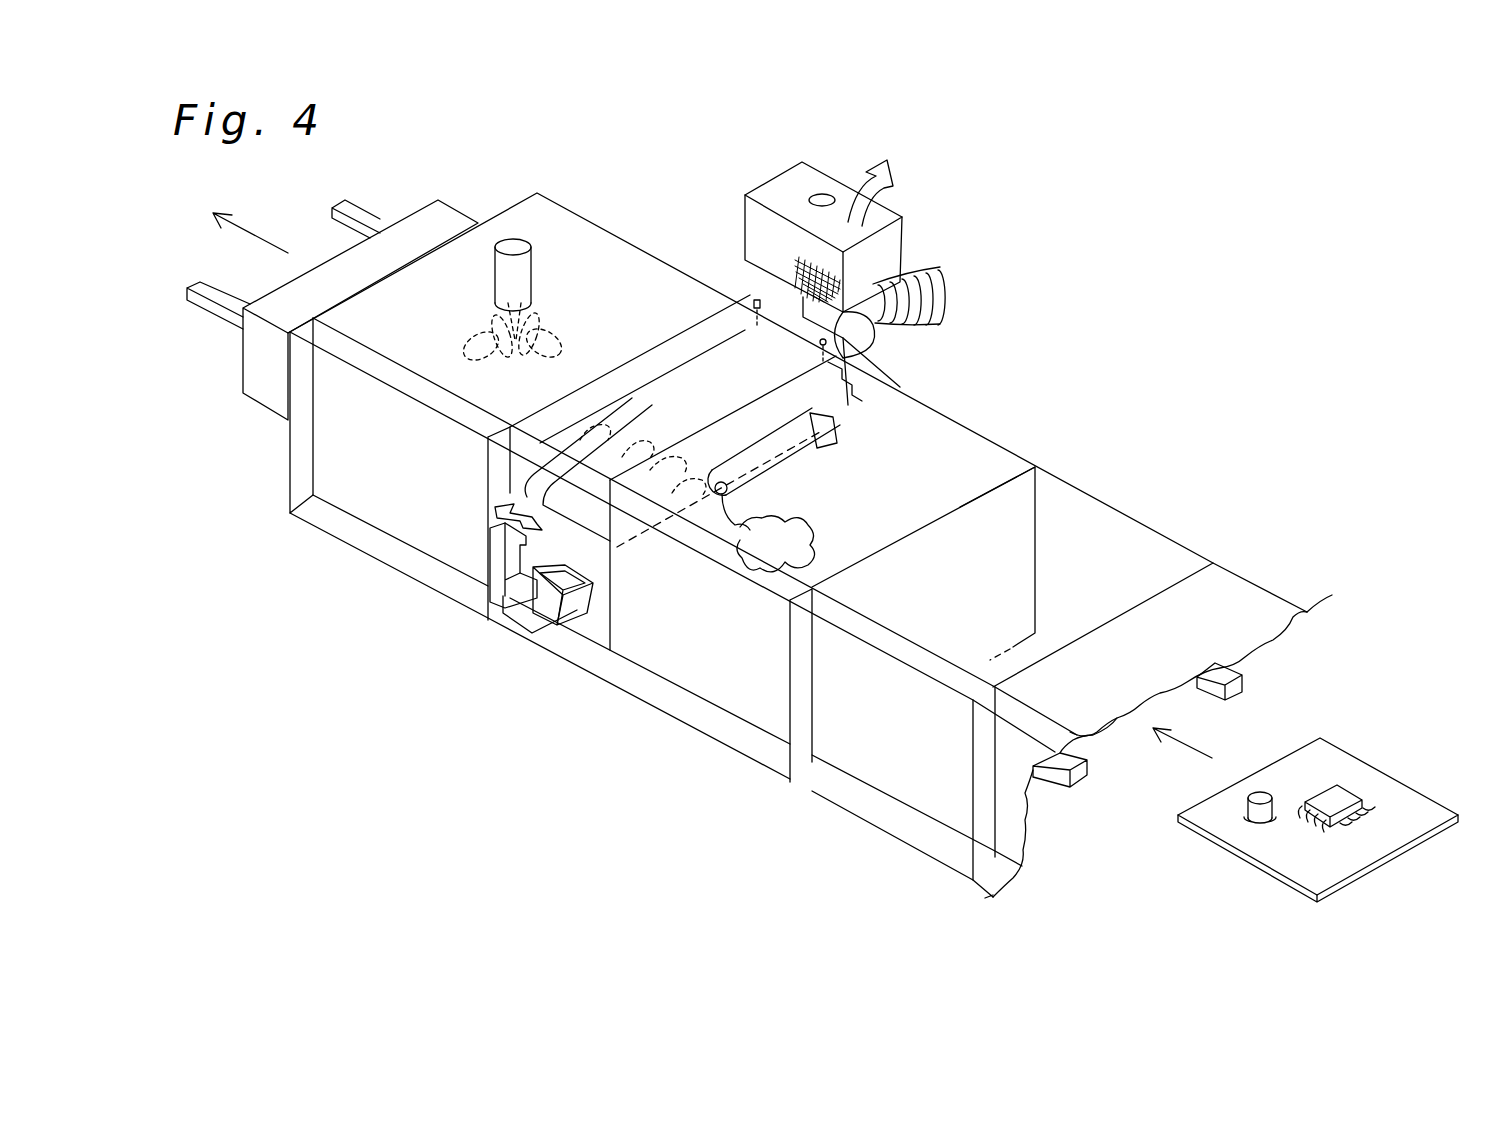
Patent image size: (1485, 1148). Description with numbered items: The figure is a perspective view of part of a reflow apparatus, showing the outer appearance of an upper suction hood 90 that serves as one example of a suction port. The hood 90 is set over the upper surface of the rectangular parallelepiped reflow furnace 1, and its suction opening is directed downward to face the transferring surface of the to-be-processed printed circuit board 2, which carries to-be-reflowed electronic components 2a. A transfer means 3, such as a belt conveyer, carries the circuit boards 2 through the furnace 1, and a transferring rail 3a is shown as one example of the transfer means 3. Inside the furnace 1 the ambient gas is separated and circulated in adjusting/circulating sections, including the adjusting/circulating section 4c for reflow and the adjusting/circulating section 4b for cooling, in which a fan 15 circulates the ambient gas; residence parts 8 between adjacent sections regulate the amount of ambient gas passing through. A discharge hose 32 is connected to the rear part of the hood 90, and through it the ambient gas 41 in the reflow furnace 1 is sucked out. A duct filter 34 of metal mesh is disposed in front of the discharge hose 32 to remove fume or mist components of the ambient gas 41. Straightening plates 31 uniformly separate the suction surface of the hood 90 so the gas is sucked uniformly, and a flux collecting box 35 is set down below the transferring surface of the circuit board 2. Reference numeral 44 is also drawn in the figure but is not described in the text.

The reflow furnace 1 is at (705, 545).
The printed circuit board 2 is at (1318, 846).
The electronic component 2a is at (1228, 865).
The transfer means 3 is at (1162, 761).
The transferring rail 3a is at (1199, 737).
The adjusting/circulating section for cooling 4b is at (673, 331).
The adjusting/circulating section for reflow 4c is at (1048, 440).
The residence part 8 is at (776, 782).
The fan 15 is at (440, 428).
The straightening plate 31 is at (855, 472).
The discharge hose 32 is at (947, 266).
The duct filter 34 is at (873, 280).
The flux collecting box 35 is at (541, 612).
The ambient gas 41 is at (802, 435).
The injection nozzle 44 is at (832, 299).
The upper suction hood 90 is at (680, 275).